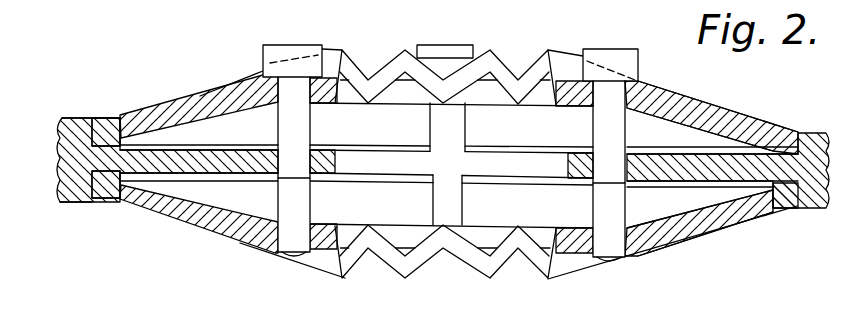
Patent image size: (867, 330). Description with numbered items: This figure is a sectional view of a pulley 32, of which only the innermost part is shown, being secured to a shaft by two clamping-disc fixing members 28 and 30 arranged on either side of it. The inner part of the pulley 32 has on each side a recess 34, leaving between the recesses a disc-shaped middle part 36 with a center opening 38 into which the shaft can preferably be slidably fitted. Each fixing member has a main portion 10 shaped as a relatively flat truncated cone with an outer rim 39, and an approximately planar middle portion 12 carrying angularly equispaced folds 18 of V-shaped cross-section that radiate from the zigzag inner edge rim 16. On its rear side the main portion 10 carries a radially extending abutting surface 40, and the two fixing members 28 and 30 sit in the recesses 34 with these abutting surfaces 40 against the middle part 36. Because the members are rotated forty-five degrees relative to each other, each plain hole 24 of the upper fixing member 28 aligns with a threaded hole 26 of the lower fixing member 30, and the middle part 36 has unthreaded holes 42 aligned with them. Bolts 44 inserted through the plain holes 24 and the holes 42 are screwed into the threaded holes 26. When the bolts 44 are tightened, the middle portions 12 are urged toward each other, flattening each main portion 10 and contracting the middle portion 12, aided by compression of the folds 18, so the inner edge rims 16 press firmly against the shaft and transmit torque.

The main portion 10 is at (172, 112).
The middle portion 12 is at (568, 94).
The inner edge rim 16 is at (384, 74).
The folds 18 is at (517, 70).
The plain bolt hole 24 is at (237, 87).
The threaded bolt hole 26 is at (312, 254).
The fixing member 28 is at (733, 103).
The fixing member 30 is at (710, 249).
The pulley 32 is at (77, 218).
The recesses 34 is at (97, 118).
The disc-shaped middle part 36 is at (220, 160).
The center opening 38 is at (386, 162).
The outer rim 39 is at (62, 117).
The abutting surface 40 is at (112, 132).
The unthreaded holes 42 is at (318, 153).
The bolts 44 is at (287, 105).